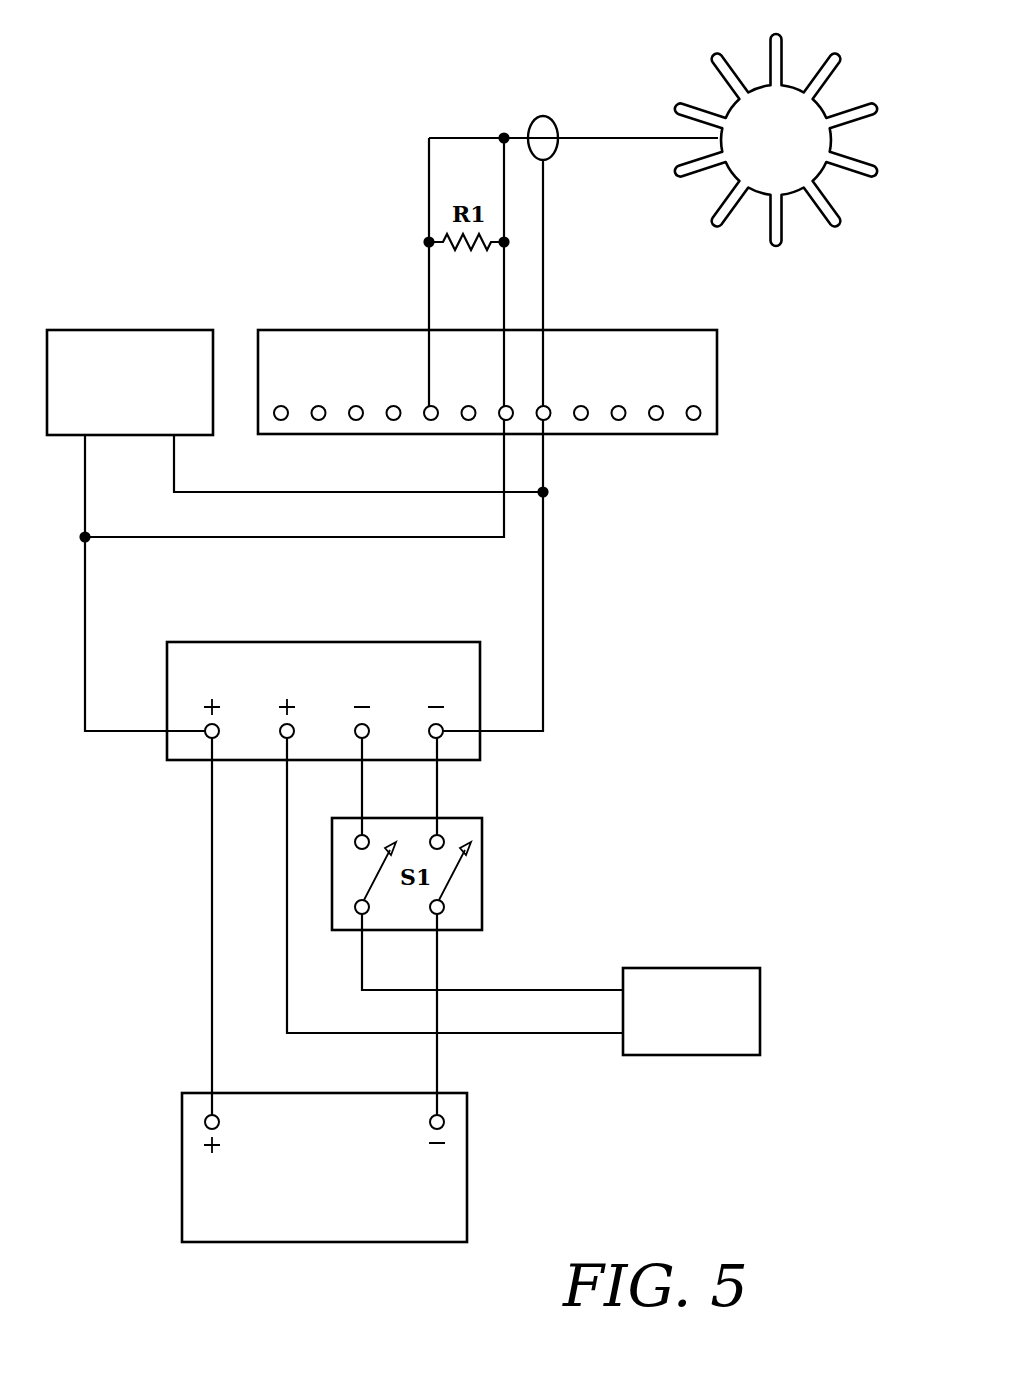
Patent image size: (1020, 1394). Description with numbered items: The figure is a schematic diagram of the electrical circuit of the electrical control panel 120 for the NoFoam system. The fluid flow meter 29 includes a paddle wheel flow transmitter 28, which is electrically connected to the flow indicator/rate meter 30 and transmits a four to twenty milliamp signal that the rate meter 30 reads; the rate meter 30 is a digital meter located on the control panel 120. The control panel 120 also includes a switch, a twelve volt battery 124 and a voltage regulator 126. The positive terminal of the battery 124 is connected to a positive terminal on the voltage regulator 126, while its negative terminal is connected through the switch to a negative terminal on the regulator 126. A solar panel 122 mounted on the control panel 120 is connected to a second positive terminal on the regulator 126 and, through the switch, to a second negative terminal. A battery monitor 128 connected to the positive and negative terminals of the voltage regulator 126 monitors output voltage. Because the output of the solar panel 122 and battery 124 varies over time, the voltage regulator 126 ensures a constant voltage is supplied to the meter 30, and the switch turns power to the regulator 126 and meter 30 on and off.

The electrical control panel 120 is at (192, 250).
The battery monitor 128 is at (49, 330).
The flow indicator/rate meter 30 is at (312, 330).
The paddle wheel flow transmitter 28 is at (796, 146).
The fluid flow meter 29 is at (660, 247).
The voltage regulator 126 is at (233, 642).
The solar panel 122 is at (678, 968).
The battery 124 is at (195, 1180).